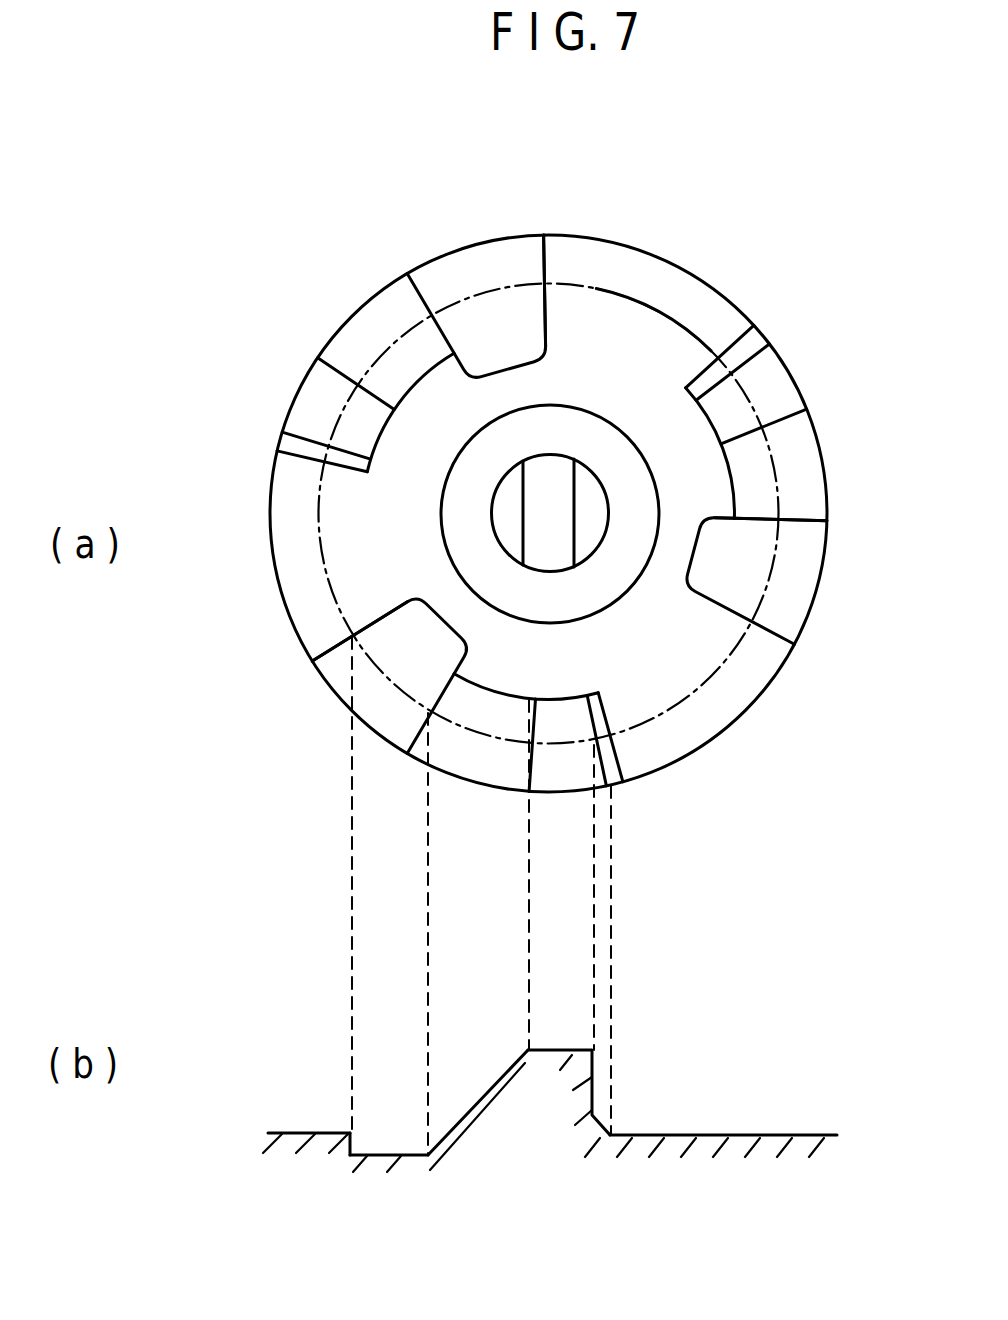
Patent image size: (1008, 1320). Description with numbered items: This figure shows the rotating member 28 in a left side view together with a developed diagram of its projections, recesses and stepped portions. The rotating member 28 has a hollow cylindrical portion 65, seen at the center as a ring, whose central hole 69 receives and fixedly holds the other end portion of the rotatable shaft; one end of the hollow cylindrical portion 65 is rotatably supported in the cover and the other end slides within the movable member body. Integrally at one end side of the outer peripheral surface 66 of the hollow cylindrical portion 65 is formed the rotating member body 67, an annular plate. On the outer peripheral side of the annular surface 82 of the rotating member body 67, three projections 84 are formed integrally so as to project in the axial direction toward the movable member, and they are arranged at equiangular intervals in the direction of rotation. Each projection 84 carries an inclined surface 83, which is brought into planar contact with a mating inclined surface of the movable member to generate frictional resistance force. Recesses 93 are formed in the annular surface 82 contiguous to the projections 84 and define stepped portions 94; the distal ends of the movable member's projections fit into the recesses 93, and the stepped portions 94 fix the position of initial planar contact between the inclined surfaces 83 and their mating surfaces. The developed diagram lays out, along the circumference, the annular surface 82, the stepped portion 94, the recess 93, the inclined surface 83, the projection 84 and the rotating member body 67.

The rotating member 28 is at (770, 244).
The hollow cylindrical portion 65 is at (580, 430).
The outer peripheral surface 66 is at (612, 602).
The rotating member body 67 is at (725, 650).
The central hole 69 is at (540, 532).
The annular surface 82 is at (573, 353).
The inclined surface 83 is at (370, 335).
The projection 84 is at (320, 395).
The recess 93 is at (483, 307).
The stepped portion 94 is at (560, 317).